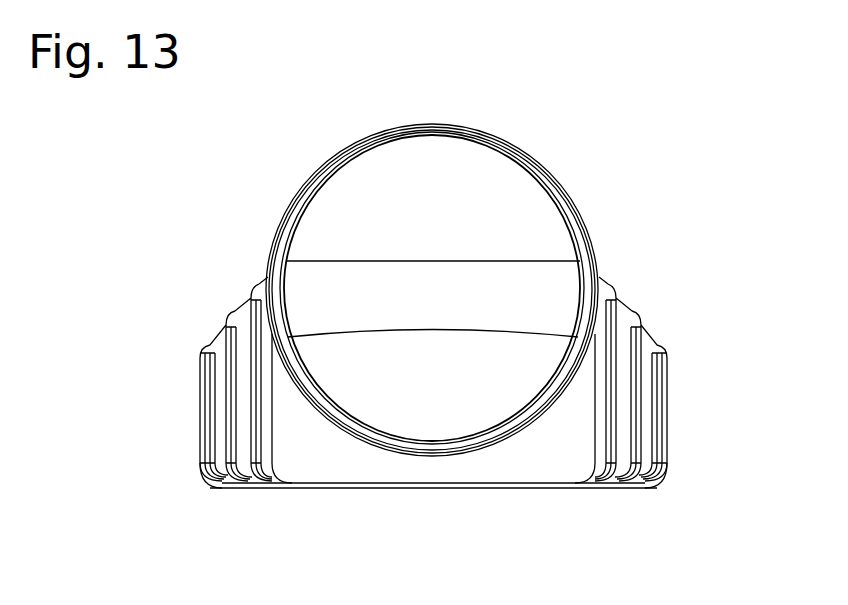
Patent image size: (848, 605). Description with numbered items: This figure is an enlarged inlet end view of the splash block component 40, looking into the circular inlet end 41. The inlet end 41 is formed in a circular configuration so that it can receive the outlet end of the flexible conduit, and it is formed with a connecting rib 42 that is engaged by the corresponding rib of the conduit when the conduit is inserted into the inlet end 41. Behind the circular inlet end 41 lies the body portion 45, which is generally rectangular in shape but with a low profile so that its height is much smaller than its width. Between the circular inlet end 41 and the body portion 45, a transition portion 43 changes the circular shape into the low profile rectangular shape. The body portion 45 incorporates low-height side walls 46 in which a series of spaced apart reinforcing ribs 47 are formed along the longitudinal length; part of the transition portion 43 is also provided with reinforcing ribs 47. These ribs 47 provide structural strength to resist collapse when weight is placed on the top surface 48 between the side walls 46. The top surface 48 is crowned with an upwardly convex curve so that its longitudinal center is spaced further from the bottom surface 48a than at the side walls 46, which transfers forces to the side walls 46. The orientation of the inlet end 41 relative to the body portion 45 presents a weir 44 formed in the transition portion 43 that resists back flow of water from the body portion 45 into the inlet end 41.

The splash block component 40 is at (567, 103).
The inlet end 41 is at (575, 203).
The connecting rib 42 is at (320, 184).
The transition portion 43 is at (553, 460).
The weir 44 is at (432, 473).
The body portion 45 is at (665, 383).
The side walls 46 is at (197, 372).
The reinforcing ribs 47 is at (637, 320).
The top surface 48 is at (382, 334).
The bottom surface 48a is at (402, 489).